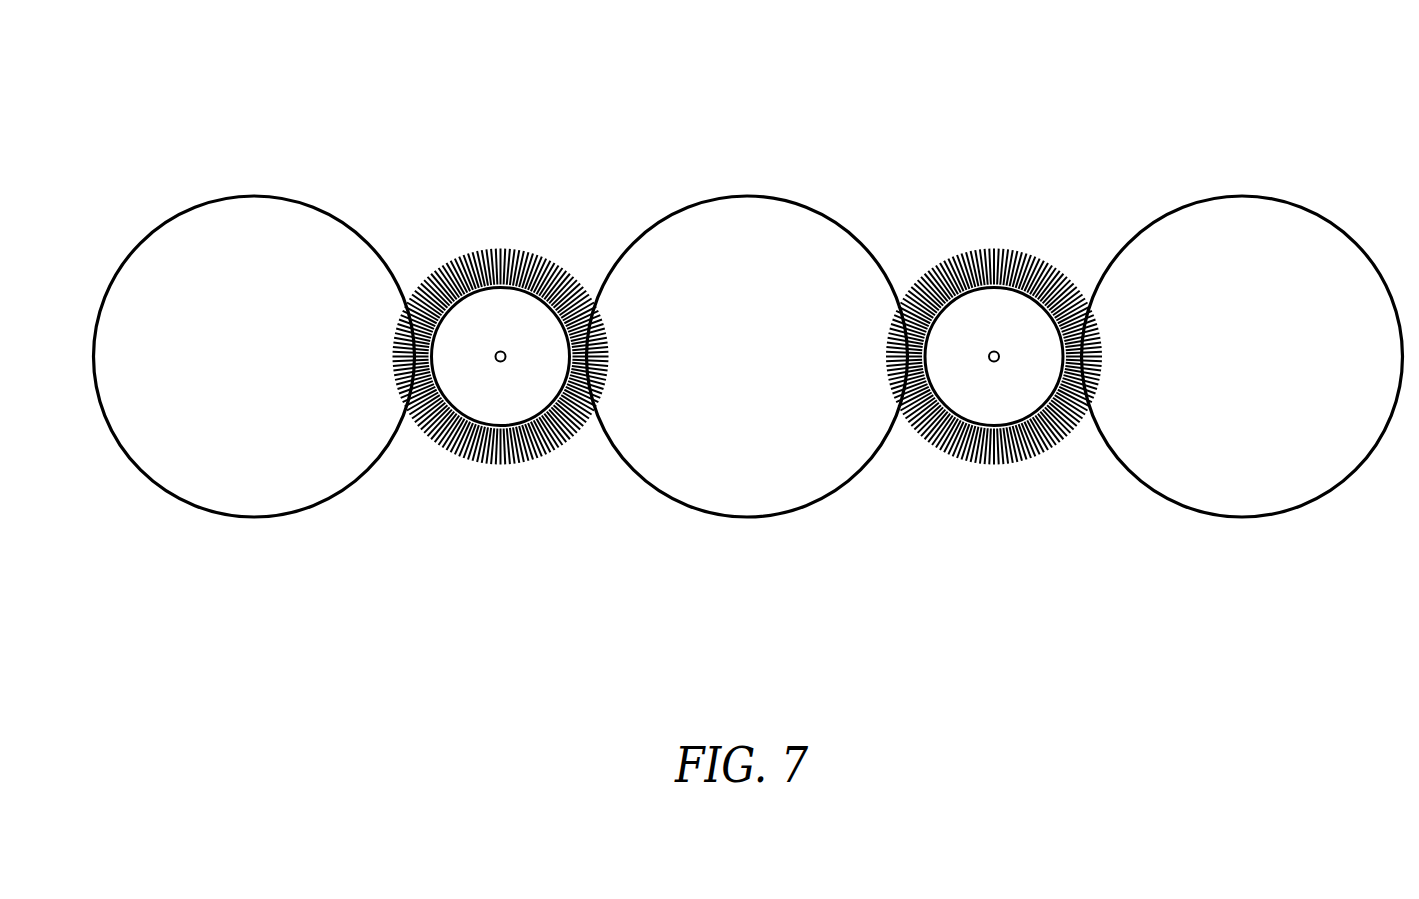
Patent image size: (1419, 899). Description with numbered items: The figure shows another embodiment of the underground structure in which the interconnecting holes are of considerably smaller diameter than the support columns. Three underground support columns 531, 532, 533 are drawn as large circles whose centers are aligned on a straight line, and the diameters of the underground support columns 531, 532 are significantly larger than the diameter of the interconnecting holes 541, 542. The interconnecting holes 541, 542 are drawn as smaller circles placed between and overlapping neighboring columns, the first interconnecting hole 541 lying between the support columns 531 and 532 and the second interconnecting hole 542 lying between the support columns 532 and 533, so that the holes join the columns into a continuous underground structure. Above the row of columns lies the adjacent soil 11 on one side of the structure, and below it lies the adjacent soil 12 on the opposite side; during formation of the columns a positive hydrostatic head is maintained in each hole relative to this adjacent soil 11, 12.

The adjacent soil 11 is at (796, 67).
The adjacent soil 12 is at (696, 634).
The underground support column 531 is at (254, 333).
The underground support column 532 is at (747, 337).
The underground support column 533 is at (1242, 332).
The interconnecting hole 541 is at (497, 342).
The interconnecting hole 542 is at (991, 345).